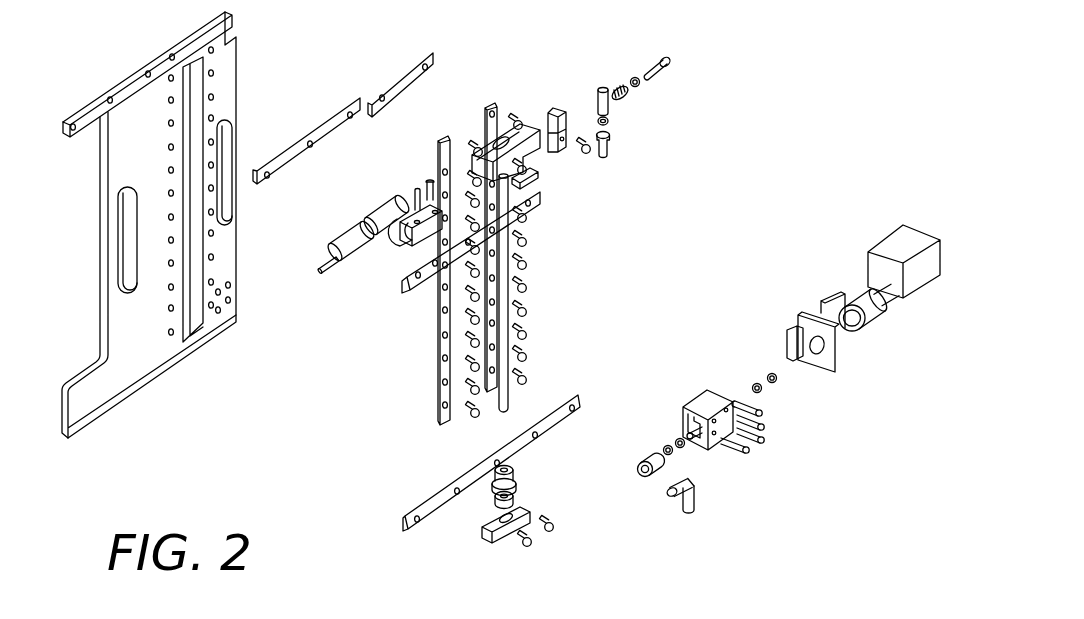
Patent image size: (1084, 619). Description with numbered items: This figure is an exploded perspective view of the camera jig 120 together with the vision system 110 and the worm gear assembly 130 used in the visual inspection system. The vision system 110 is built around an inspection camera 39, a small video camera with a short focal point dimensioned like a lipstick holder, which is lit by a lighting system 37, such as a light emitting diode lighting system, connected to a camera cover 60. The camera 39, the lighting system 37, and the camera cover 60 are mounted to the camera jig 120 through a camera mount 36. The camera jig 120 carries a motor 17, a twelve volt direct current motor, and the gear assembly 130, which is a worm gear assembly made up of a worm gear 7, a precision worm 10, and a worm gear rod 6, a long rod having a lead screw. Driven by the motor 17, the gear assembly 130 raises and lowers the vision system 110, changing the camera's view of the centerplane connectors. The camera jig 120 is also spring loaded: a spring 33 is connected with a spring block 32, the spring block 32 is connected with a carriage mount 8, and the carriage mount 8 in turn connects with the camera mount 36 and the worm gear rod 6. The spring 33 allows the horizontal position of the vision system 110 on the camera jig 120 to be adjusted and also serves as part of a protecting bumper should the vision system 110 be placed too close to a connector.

The worm gear rod 6 is at (508, 400).
The worm gear 7 is at (510, 480).
The carriage mount 8 is at (533, 125).
The worm 10 is at (650, 455).
The motor 17 is at (873, 320).
The spring block 32 is at (560, 108).
The spring 33 is at (620, 85).
The camera mount 36 is at (405, 238).
The lighting system 37 is at (330, 277).
The inspection camera 39 is at (390, 205).
The camera cover 60 is at (345, 235).
The vision system 110 is at (318, 250).
The camera jig 120 is at (720, 116).
The gear assembly 130 is at (578, 500).